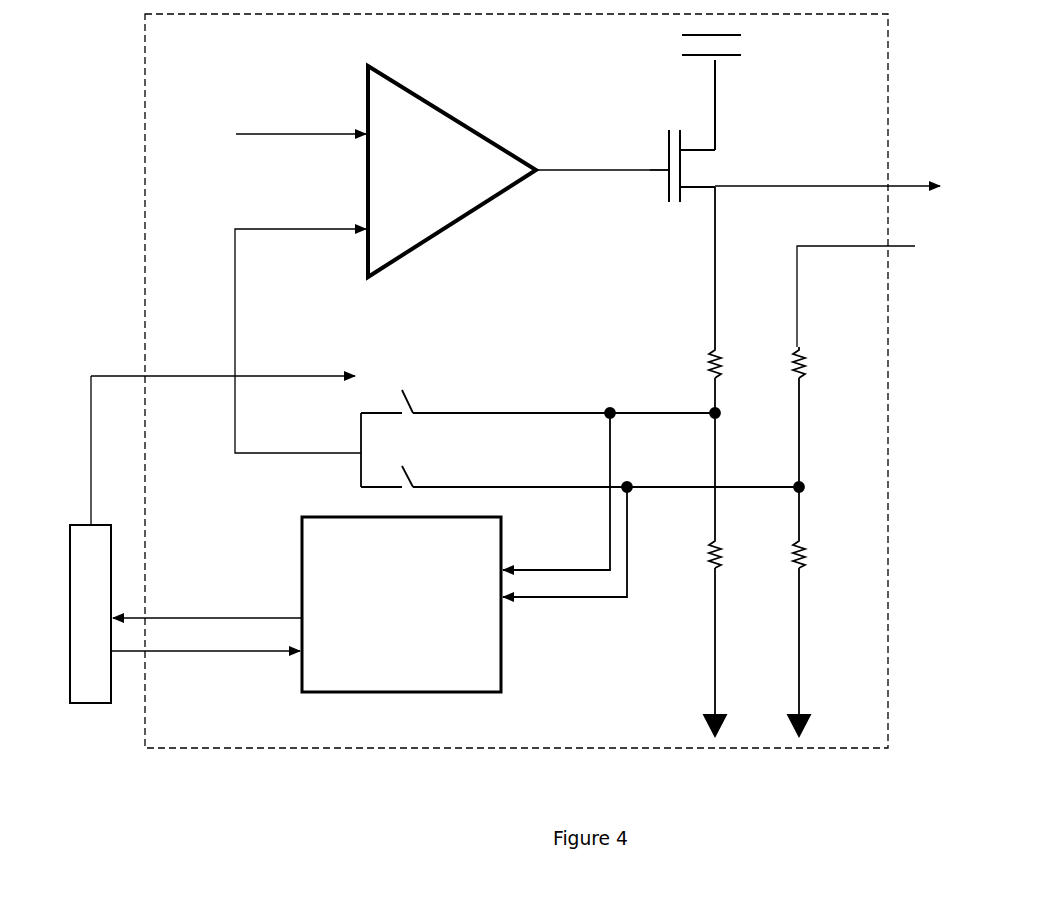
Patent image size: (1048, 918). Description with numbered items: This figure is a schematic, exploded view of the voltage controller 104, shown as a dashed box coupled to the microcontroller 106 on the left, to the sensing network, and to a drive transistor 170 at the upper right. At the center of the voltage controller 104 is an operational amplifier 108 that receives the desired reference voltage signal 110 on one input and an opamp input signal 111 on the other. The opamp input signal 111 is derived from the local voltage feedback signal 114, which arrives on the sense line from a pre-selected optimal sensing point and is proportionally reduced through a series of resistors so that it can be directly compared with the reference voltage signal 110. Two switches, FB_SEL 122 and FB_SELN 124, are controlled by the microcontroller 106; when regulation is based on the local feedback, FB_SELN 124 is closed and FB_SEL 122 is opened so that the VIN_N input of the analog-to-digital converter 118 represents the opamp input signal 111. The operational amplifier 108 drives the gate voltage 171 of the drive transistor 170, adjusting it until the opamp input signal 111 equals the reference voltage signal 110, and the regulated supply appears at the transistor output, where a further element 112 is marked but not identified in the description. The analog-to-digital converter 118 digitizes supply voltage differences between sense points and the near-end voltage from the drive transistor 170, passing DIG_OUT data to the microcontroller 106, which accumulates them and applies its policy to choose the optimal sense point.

The voltage controller 104 is at (143, 309).
The microcontroller 106 is at (88, 704).
The operational amplifier 108 is at (474, 127).
The reference voltage signal 110 is at (258, 100).
The opamp input signal 111 is at (281, 227).
The supply output node 112 is at (712, 188).
The local voltage feedback signal 114 is at (797, 244).
The analog-to-digital converter 118 is at (425, 692).
The FB_SEL 122 is at (443, 370).
The FB_SELN 124 is at (461, 450).
The drive transistor 170 is at (650, 114).
The gate voltage 171 is at (650, 167).